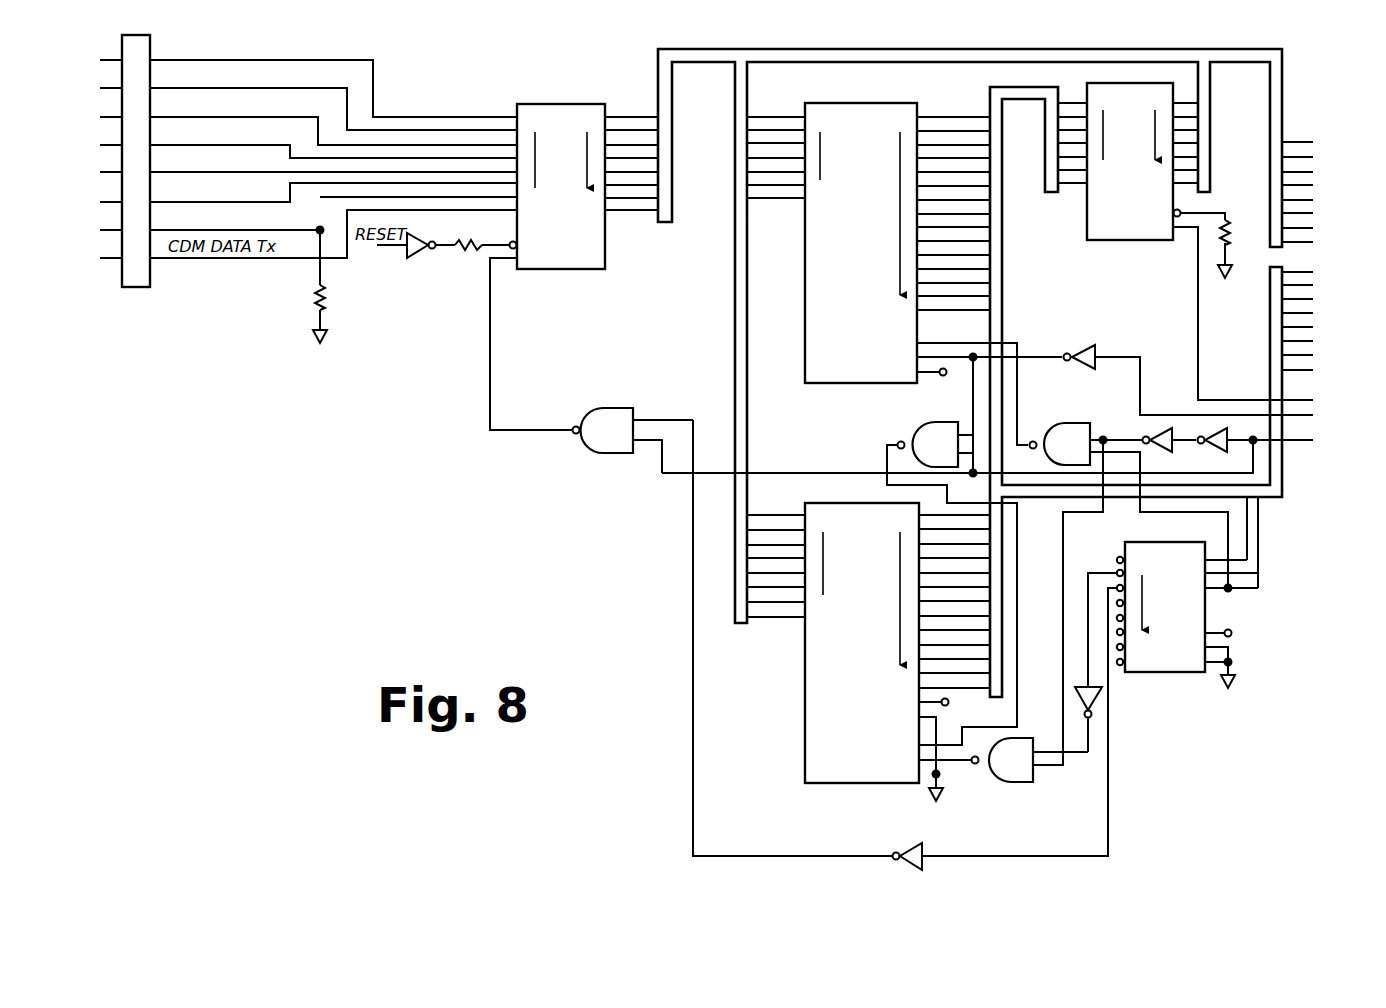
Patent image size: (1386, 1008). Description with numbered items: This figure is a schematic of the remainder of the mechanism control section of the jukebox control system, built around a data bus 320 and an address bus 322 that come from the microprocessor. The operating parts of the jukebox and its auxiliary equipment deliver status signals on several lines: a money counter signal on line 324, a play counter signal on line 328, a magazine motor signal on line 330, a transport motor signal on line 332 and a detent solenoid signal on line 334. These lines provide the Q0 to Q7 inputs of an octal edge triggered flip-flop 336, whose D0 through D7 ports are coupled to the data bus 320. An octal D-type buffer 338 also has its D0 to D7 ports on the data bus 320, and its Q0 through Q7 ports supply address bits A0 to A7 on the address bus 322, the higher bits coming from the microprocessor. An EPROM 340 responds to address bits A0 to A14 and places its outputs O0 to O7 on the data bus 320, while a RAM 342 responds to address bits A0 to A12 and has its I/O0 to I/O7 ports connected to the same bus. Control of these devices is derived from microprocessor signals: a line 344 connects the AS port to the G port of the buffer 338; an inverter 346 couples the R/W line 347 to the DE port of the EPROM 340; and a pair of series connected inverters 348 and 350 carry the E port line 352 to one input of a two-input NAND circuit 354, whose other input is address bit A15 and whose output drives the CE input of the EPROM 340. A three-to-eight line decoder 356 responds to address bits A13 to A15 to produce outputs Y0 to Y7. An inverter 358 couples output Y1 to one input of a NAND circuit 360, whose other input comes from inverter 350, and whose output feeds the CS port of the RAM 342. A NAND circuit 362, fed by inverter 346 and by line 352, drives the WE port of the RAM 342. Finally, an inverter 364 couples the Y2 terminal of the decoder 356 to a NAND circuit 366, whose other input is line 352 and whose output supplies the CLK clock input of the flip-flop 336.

The data bus 320 is at (768, 48).
The address bus 322 is at (1004, 270).
The money counter signal line 324 is at (310, 58).
The play counter signal line 328 is at (287, 88).
The magazine motor signal line 330 is at (272, 116).
The transport motor signal line 332 is at (383, 157).
The detent solenoid signal line 334 is at (418, 170).
The octal edge triggered flip-flop 336 is at (192, 205).
The octal D-type buffer 338 is at (1110, 235).
The EPROM 340 is at (852, 377).
The RAM 342 is at (843, 772).
The line 344 is at (1240, 400).
The inverter 346 is at (1076, 350).
The R/W line 347 is at (1170, 413).
The inverter 348 is at (1228, 436).
The inverter 350 is at (1150, 433).
The E port line 352 is at (1258, 441).
The two-input NAND circuit 354 is at (1050, 423).
The 3-to-8 line decoder 356 is at (1157, 665).
The inverter 358 is at (1097, 697).
The two-input NAND circuit 360 is at (992, 772).
The NAND circuit 362 is at (933, 423).
The inverter 364 is at (910, 845).
The two-input NAND circuit 366 is at (603, 415).